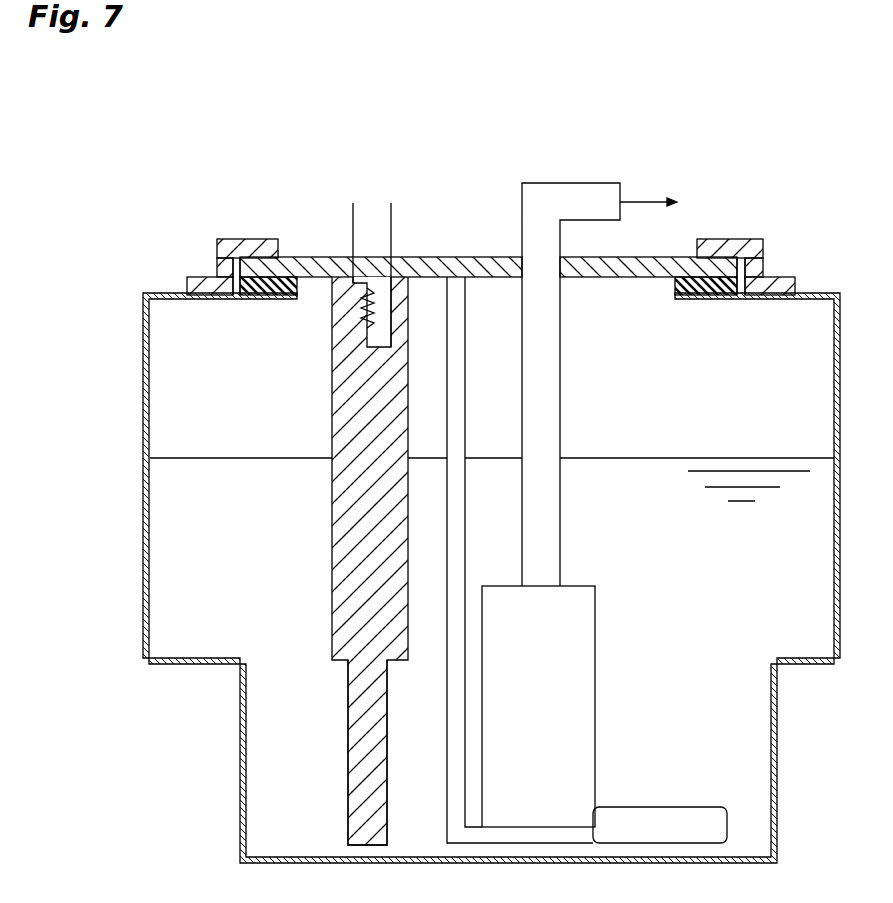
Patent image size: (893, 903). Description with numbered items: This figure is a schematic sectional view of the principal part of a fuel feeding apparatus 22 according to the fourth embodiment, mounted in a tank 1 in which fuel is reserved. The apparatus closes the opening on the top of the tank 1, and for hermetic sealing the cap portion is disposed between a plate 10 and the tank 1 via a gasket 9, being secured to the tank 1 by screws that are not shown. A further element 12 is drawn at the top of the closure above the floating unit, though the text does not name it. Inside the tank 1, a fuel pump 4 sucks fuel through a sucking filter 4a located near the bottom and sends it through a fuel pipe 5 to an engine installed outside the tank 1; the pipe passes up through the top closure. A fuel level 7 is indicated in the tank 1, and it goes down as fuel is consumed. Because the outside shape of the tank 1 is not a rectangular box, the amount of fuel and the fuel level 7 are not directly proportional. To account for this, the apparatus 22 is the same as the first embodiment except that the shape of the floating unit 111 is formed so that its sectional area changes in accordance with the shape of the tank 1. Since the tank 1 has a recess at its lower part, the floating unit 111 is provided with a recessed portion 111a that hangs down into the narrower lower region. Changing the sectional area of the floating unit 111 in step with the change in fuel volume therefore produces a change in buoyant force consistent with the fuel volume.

The tank 1 is at (143, 352).
The fuel pump 4 is at (595, 672).
The sucking filter 4a is at (652, 808).
The fuel pipe 5 is at (560, 368).
The fuel level 7 is at (663, 458).
The gasket 9 is at (287, 257).
The plate 10 is at (233, 250).
The sensor 12 is at (365, 280).
The fuel feeding apparatus 22 is at (488, 195).
The floating unit 111 is at (332, 528).
The recessed portion 111a is at (348, 733).